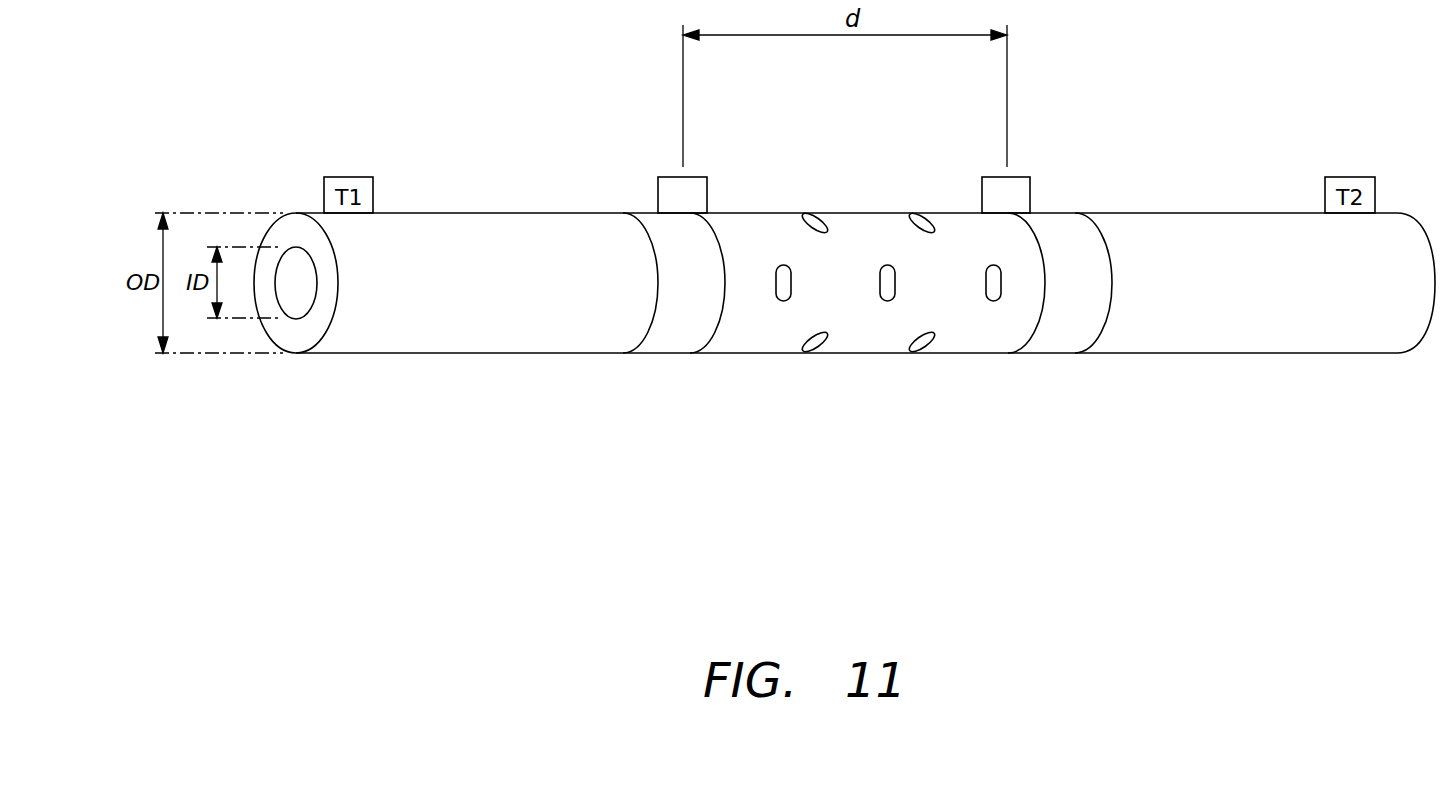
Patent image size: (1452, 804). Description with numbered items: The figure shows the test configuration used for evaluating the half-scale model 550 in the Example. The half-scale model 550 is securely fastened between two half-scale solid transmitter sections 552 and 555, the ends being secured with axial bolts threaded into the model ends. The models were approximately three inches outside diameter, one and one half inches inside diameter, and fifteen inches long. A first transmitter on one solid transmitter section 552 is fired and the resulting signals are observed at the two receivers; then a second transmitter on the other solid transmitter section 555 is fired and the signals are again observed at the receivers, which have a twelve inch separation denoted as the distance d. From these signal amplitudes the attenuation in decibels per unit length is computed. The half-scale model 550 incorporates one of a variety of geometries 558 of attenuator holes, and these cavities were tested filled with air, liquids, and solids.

The half-scale model 550 is at (1092, 382).
The half-scale solid transmitter section 552 is at (472, 220).
The half-scale solid transmitter section 555 is at (1204, 220).
The geometries of attenuator holes 558 is at (1000, 163).